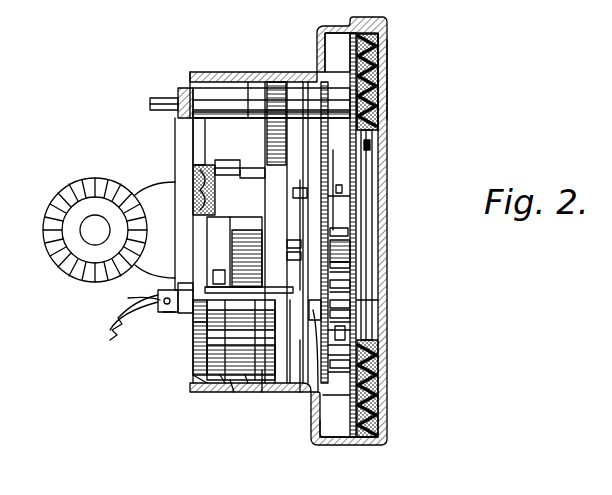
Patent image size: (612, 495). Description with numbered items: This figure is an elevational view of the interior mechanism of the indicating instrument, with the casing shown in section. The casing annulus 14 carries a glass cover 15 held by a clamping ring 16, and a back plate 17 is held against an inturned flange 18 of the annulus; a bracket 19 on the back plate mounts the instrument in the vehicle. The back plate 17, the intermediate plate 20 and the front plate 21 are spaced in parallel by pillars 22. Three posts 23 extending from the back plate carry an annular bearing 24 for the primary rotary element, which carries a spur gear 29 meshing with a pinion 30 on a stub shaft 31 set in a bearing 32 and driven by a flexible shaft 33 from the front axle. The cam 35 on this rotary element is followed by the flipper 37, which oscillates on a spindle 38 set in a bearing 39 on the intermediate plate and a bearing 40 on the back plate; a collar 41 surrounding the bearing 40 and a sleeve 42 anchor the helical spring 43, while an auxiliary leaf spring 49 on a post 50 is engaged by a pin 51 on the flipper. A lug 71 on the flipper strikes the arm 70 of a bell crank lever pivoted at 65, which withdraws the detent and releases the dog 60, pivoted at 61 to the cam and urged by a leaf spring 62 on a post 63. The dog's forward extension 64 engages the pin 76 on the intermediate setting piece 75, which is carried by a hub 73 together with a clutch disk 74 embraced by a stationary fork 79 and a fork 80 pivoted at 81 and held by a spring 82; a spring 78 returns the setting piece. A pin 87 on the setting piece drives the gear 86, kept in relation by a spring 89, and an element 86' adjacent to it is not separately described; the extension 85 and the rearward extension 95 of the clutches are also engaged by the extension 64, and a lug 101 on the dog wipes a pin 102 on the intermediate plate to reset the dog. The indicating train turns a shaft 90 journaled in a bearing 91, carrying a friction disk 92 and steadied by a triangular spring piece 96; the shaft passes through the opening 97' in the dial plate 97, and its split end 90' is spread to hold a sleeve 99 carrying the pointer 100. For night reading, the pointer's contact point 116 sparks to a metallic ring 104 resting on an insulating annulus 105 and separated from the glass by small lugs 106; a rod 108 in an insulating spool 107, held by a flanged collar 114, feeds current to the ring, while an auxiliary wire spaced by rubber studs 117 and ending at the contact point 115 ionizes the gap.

The clamping ring 16 is at (394, 441).
The metallic ring 104 is at (388, 96).
The intermediate setting piece 75 is at (385, 433).
The pin 76 is at (329, 448).
The pillars 22 is at (237, 78).
The insulating spool 107 is at (198, 74).
The intermediate plate 20 is at (300, 100).
The rod 108 is at (250, 100).
The post 50 is at (205, 125).
The flanged collar 114 is at (188, 92).
The front plate 21 is at (338, 53).
The contact point 116 is at (360, 120).
The auxiliary contact point 115 is at (410, 108).
The insulating annulus 105 is at (380, 48).
The small lugs 106 is at (385, 72).
The gear 86 is at (387, 388).
The spring seat 86' is at (424, 295).
The rubber studs 117 is at (373, 150).
The indicating hand 100 is at (372, 160).
The spindle 38 is at (297, 185).
The flipper 37 is at (276, 232).
The pin 51 is at (257, 140).
The posts 23 is at (175, 250).
The bearing 40 is at (200, 185).
The collar 41 is at (205, 165).
The leaf spring 49 is at (197, 130).
The sleeve 42 is at (225, 160).
The helical spring 43 is at (247, 168).
The bracket 19 is at (150, 200).
The spur gear 29 is at (249, 255).
The spring 82 is at (293, 192).
The rearward extension 95 is at (300, 235).
The lug 71 is at (287, 244).
The clutch extension 85 is at (287, 258).
The bearing 39 is at (333, 200).
The triangular spring piece 96 is at (342, 189).
The friction disk 92 is at (420, 166).
The spring 89 is at (350, 250).
The shaft 90 is at (374, 245).
The split end 90' is at (393, 250).
The sleeve 99 is at (350, 283).
The opening 97' is at (393, 272).
The bearing 91 is at (340, 300).
The pivot 81 is at (400, 276).
The pivoted fork 80 is at (350, 314).
The clutch disk 74 is at (425, 303).
The glass cover 15 is at (352, 330).
The spring 78 is at (402, 313).
The stationary fork 79 is at (350, 345).
The hub 73 is at (420, 344).
The dial plate 97 is at (374, 357).
The pin 87 is at (400, 366).
The lug 101 is at (390, 388).
The back plate 17 is at (200, 340).
The dog 60 is at (215, 340).
The leaf spring 62 is at (215, 355).
The arm 70 is at (190, 315).
The inturned flange 18 is at (200, 385).
The annulus 14 is at (222, 390).
The annular bearing 24 is at (248, 392).
The pin 102 is at (233, 395).
The cam 35 is at (262, 395).
The forward extension 64 is at (276, 395).
The pivot 61 is at (290, 395).
The pivot 65 is at (300, 395).
The post 63 is at (316, 400).
The bearing 32 is at (180, 297).
The pinion 30 is at (180, 313).
The stub shaft 31 is at (170, 318).
The flexible shaft 33 is at (110, 330).